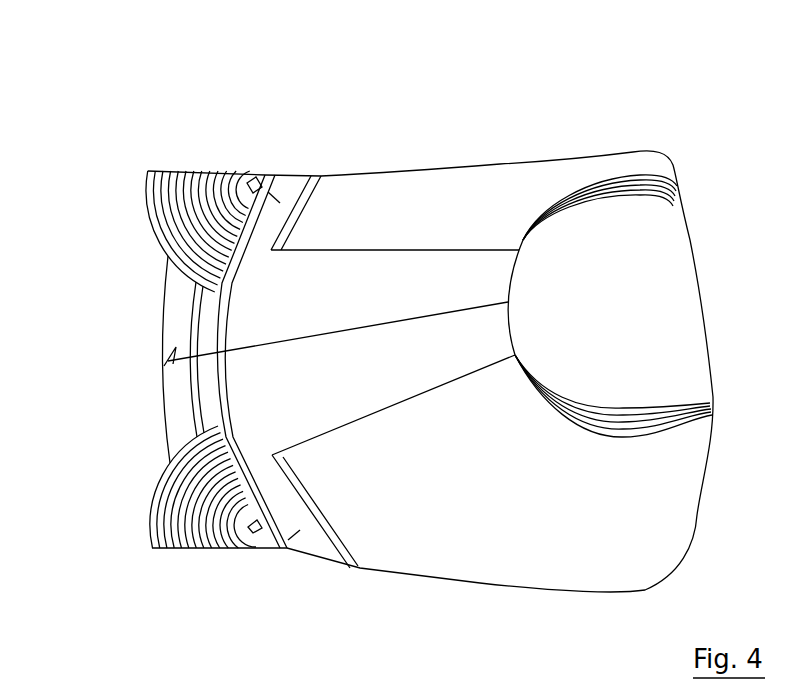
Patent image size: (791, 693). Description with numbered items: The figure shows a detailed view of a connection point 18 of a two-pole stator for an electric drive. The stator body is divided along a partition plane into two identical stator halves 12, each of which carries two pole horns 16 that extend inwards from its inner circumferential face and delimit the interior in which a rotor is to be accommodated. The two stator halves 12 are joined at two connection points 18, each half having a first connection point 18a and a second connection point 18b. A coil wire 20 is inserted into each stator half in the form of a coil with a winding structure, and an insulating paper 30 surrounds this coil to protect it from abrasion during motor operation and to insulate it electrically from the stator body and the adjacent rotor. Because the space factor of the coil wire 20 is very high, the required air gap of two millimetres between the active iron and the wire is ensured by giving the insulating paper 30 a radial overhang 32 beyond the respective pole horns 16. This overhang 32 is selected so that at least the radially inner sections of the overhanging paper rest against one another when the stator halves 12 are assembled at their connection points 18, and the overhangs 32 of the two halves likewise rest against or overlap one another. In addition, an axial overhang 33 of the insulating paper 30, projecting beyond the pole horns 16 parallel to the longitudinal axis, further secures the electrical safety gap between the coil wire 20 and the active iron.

The stator half 12 is at (148, 124).
The pole horn 16 is at (470, 222).
The connection point 18 is at (156, 361).
The first connection point 18a is at (162, 340).
The second connection point 18b is at (163, 368).
The coil wire 20 is at (155, 223).
The insulating paper 30 is at (416, 297).
The radial overhang 32 is at (490, 322).
The axial overhang 33 is at (259, 172).